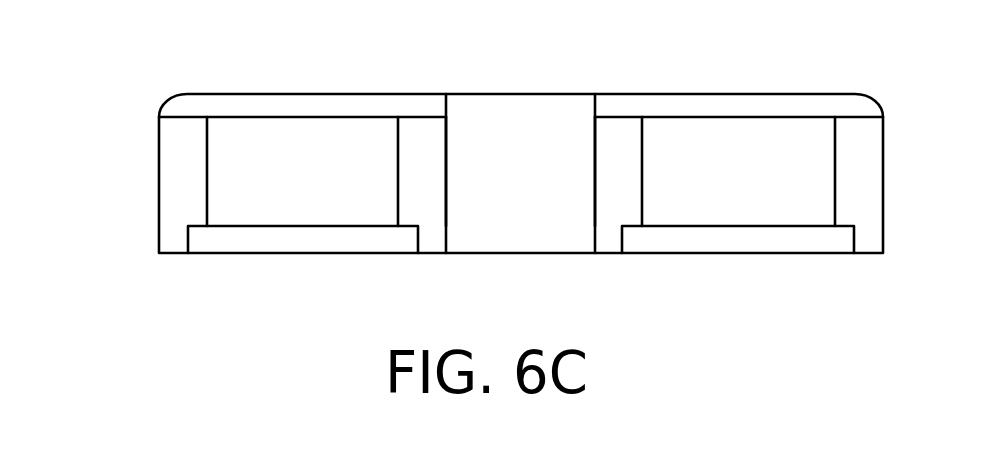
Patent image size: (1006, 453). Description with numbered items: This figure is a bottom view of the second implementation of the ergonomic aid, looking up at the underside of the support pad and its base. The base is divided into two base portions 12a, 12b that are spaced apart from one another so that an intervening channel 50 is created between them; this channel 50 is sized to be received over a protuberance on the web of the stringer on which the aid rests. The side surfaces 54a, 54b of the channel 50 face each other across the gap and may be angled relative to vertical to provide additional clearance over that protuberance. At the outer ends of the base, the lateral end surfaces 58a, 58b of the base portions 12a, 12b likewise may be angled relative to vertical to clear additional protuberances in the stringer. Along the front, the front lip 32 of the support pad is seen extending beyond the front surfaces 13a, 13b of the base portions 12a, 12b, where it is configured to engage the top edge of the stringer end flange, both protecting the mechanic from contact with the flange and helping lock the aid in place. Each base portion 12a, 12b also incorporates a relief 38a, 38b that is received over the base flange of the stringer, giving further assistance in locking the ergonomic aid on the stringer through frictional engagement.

The channel 50 is at (531, 179).
The front surface of first base portion 13a is at (278, 105).
The front surface of second base portion 13b is at (802, 115).
The front lip 32 is at (657, 105).
The lateral end surface of first base portion 58a is at (188, 180).
The lateral end surface of second base portion 58b is at (858, 172).
The first base portion 12a is at (323, 188).
The second base portion 12b is at (765, 188).
The relief of first base portion 38a is at (358, 237).
The relief of second base portion 38b is at (700, 240).
The first side surface of channel 54a is at (423, 170).
The second side surface of channel 54b is at (623, 176).